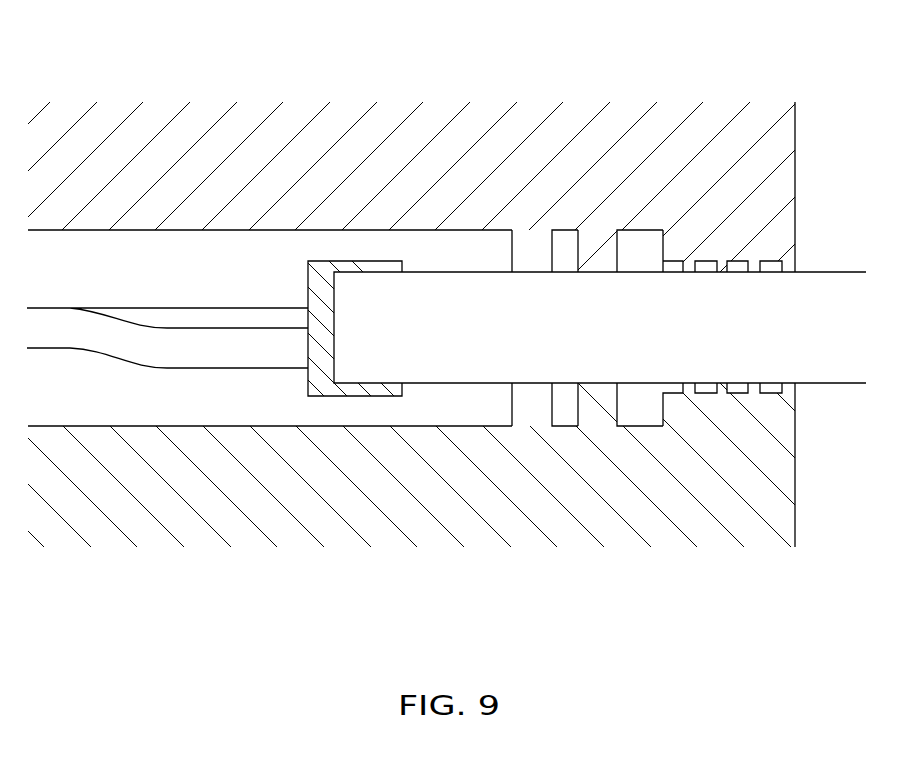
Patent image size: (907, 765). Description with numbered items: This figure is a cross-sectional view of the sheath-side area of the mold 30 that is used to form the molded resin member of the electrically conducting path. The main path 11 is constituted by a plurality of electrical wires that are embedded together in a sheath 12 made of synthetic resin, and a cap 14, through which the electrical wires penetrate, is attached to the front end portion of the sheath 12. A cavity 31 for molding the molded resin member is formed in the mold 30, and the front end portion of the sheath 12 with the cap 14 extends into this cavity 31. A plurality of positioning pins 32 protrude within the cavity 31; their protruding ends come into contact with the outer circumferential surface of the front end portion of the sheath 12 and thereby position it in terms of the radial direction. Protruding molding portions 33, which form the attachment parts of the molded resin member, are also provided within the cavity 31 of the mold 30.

The main path 11 is at (831, 233).
The sheath 12 is at (843, 363).
The cap 14 is at (320, 285).
The mold 30 is at (775, 503).
The cavity 31 is at (262, 423).
The positioning pins 32 is at (522, 253).
The protruding molding portions 33 is at (618, 257).